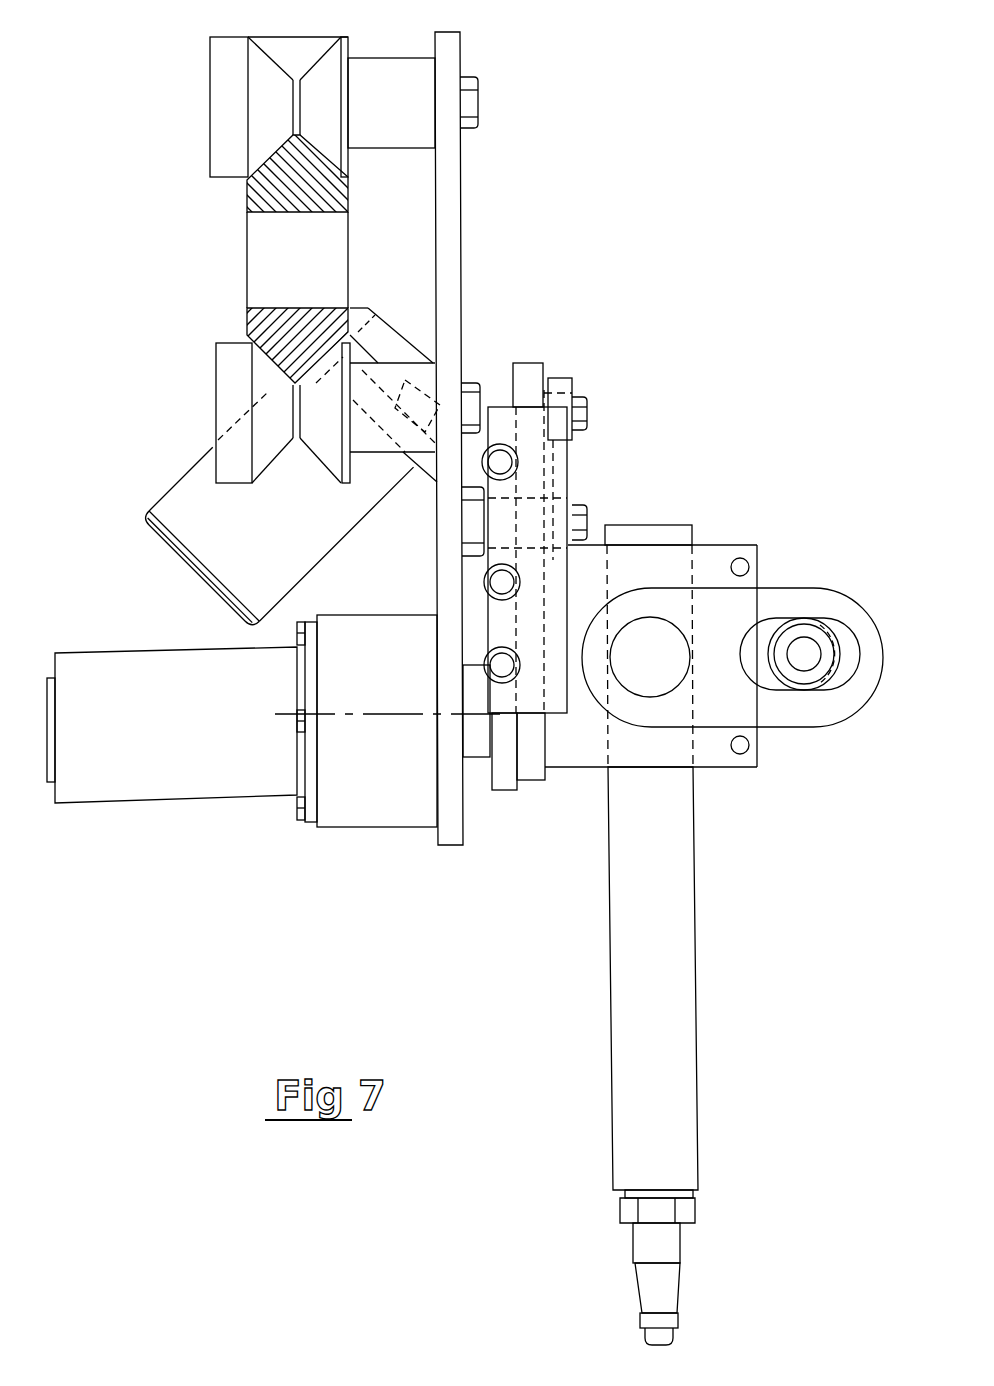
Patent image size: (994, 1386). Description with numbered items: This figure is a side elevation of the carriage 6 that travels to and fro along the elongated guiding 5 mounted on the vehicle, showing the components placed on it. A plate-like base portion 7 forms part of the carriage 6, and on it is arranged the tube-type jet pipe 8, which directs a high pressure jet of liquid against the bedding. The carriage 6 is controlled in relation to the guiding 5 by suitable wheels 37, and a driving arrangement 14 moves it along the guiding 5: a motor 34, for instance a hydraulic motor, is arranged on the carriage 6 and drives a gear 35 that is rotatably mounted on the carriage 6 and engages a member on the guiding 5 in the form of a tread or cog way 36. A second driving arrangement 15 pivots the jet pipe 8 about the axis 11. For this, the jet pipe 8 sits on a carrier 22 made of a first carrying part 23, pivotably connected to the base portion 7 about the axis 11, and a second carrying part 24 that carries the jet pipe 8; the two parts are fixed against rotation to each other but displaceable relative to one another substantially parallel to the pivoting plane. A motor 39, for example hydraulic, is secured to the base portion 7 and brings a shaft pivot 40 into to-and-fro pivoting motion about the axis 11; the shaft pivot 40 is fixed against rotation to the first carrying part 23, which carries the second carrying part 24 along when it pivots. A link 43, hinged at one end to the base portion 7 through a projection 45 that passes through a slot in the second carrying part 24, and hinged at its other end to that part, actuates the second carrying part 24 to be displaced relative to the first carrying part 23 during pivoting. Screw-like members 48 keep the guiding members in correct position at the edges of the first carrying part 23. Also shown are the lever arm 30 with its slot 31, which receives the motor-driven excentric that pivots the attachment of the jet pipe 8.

The guiding 5 is at (247, 195).
The carriage 6 is at (492, 210).
The base portion 7 is at (452, 303).
The jet pipe 8 is at (678, 898).
The axis 11 is at (348, 712).
The driving arrangement 14 is at (130, 566).
The driving arrangement 15 is at (175, 884).
The carrier 22 is at (544, 798).
The first carrying part 23 is at (503, 778).
The second carrying part 24 is at (533, 757).
The lever arm 30 is at (783, 603).
The slot 31 is at (843, 717).
The motor 34 is at (190, 493).
The gear 35 is at (393, 347).
The cog way 36 is at (363, 317).
The wheels 37 is at (227, 110).
The motor 39 is at (113, 785).
The shaft pivot 40 is at (473, 733).
The link 43 is at (573, 463).
The projection 45 is at (475, 522).
The members 48 is at (500, 460).